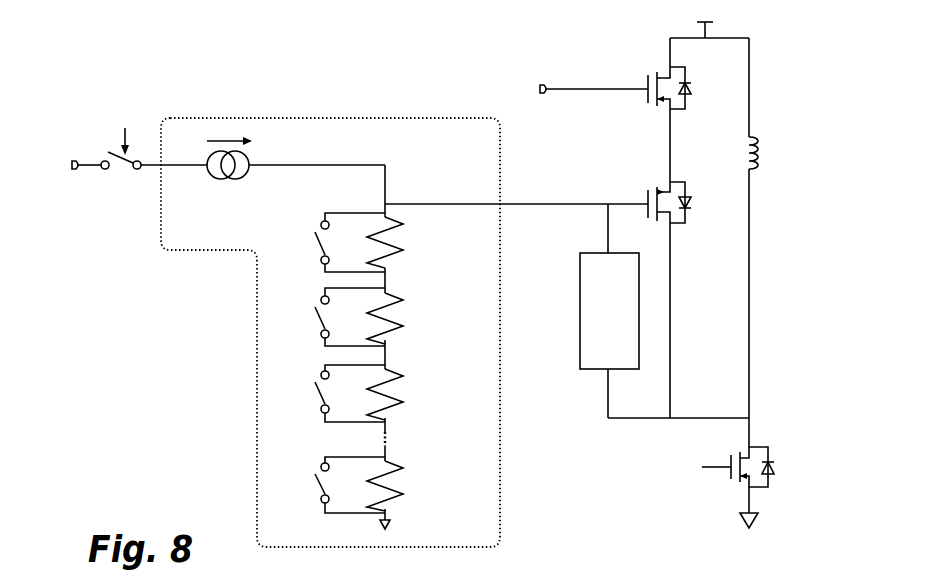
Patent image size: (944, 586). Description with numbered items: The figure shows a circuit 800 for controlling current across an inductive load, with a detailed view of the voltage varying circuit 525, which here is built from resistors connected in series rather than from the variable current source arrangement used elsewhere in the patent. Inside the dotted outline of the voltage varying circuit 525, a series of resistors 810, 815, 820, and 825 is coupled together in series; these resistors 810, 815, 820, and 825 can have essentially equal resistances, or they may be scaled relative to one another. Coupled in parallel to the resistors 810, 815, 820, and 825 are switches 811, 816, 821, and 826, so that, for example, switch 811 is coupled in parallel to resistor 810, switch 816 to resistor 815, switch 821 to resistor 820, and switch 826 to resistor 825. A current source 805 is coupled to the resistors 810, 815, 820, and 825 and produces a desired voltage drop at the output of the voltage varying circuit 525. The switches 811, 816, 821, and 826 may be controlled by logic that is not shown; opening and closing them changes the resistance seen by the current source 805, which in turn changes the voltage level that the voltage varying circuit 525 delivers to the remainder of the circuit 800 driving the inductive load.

The circuit 800 is at (133, 84).
The voltage varying circuit 525 is at (350, 118).
The current source 805 is at (222, 181).
The resistor 810 is at (406, 237).
The switch 811 is at (314, 242).
The resistor 815 is at (406, 312).
The switch 816 is at (314, 318).
The resistor 820 is at (406, 386).
The switch 821 is at (314, 393).
The resistor 825 is at (406, 477).
The switch 826 is at (314, 488).